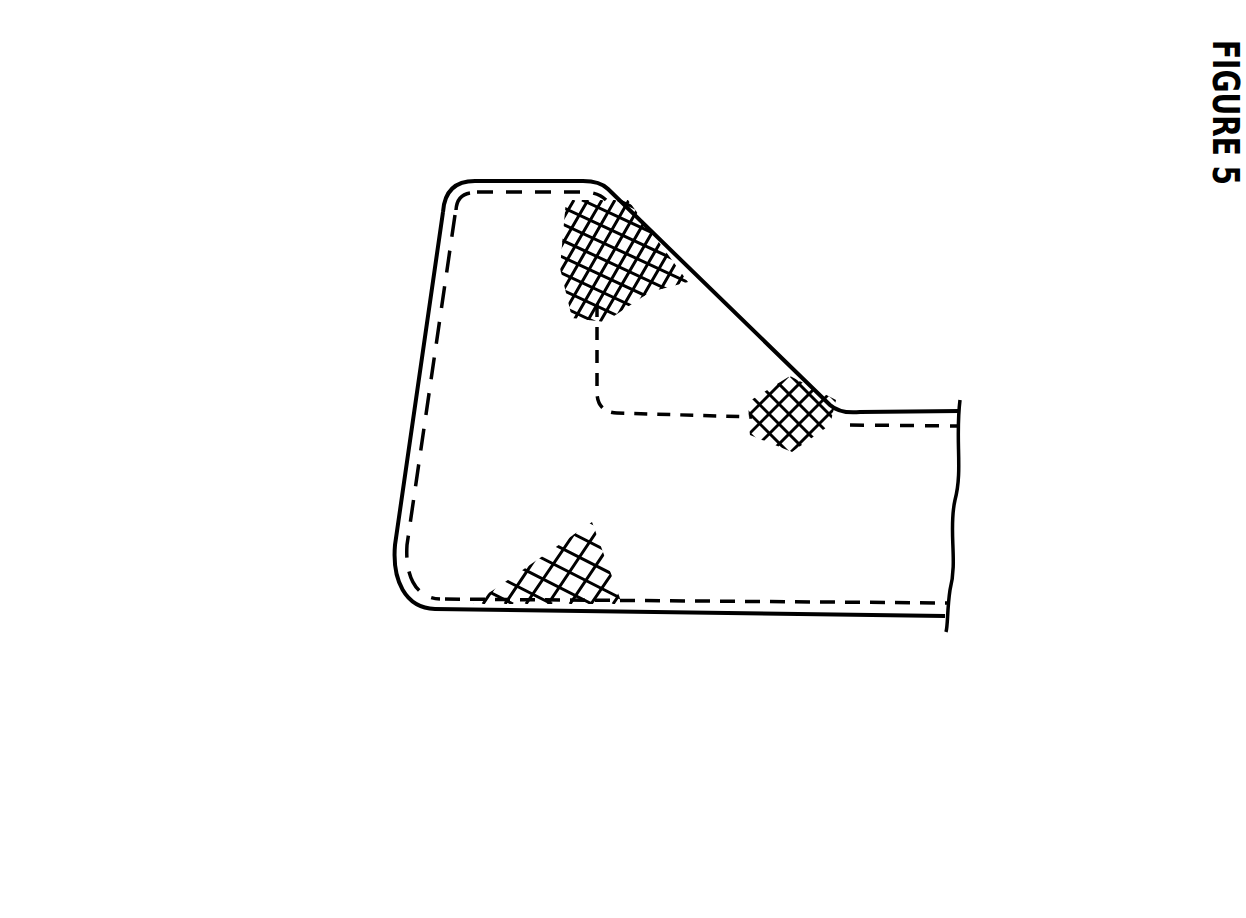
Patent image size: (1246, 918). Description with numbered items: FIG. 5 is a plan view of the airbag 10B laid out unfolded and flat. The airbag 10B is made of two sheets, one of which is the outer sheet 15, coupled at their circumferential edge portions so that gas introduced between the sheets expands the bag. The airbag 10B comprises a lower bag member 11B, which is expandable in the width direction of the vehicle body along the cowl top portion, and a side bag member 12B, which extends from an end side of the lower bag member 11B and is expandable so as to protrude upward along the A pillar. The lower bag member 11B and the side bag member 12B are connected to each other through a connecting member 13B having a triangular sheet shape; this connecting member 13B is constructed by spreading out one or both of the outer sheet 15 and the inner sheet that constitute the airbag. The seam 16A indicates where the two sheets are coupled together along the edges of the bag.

The airbag 10B is at (382, 493).
The lower bag member 11B is at (697, 535).
The side bag member 12B is at (483, 278).
The connecting member 13B is at (710, 320).
The outer sheet 15 is at (910, 535).
The seam 16A is at (492, 186).